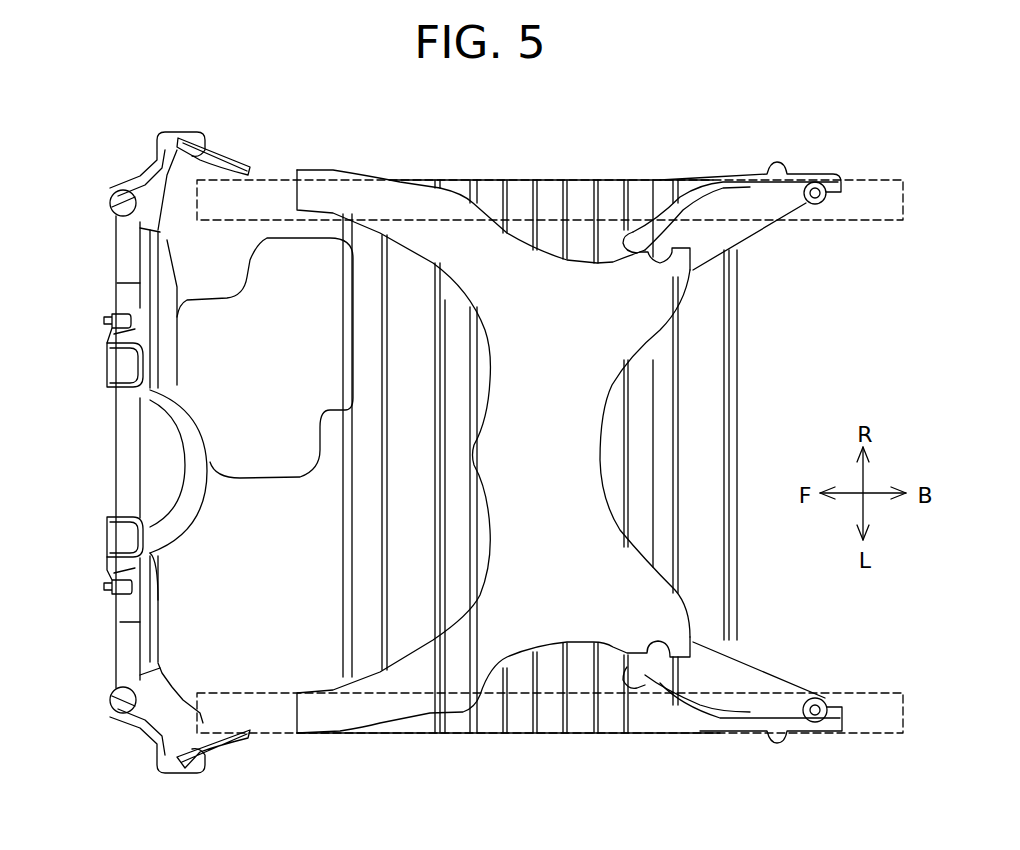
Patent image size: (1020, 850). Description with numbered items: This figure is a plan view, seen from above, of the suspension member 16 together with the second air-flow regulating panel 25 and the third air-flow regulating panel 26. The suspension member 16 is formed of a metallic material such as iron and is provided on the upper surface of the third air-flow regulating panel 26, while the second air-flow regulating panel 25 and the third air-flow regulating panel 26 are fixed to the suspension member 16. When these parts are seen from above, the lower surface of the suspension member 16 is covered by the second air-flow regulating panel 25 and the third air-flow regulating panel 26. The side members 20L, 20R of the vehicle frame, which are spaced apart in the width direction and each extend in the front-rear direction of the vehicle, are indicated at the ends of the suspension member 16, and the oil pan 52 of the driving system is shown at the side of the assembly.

The suspension member 16 is at (383, 182).
The second air-flow regulating panel 25 is at (276, 190).
The third air-flow regulating panel 26 is at (582, 190).
The side member 20R is at (865, 180).
The side member 20L is at (868, 733).
The oil pan 52 is at (182, 358).